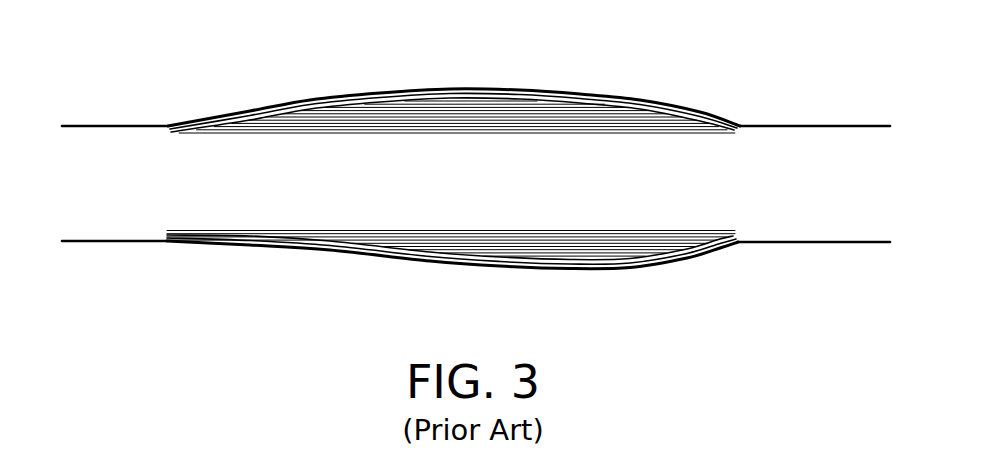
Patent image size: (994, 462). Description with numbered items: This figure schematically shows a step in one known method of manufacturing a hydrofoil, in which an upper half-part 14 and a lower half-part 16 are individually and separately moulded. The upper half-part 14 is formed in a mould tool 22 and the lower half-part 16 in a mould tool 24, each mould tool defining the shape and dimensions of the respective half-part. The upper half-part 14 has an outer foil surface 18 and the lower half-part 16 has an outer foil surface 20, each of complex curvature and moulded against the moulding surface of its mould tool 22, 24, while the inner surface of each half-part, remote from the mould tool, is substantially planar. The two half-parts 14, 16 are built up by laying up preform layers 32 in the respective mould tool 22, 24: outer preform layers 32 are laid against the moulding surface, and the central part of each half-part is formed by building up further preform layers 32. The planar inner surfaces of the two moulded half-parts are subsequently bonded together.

The upper spar cap laminate 14 is at (430, 100).
The lower spar cap laminate 16 is at (427, 253).
The upper outer skin layer 18 is at (270, 108).
The lower outer skin layer 20 is at (343, 251).
The upper shell surface 22 is at (127, 123).
The lower shell surface 24 is at (117, 245).
The fiber plies 32 is at (547, 108).